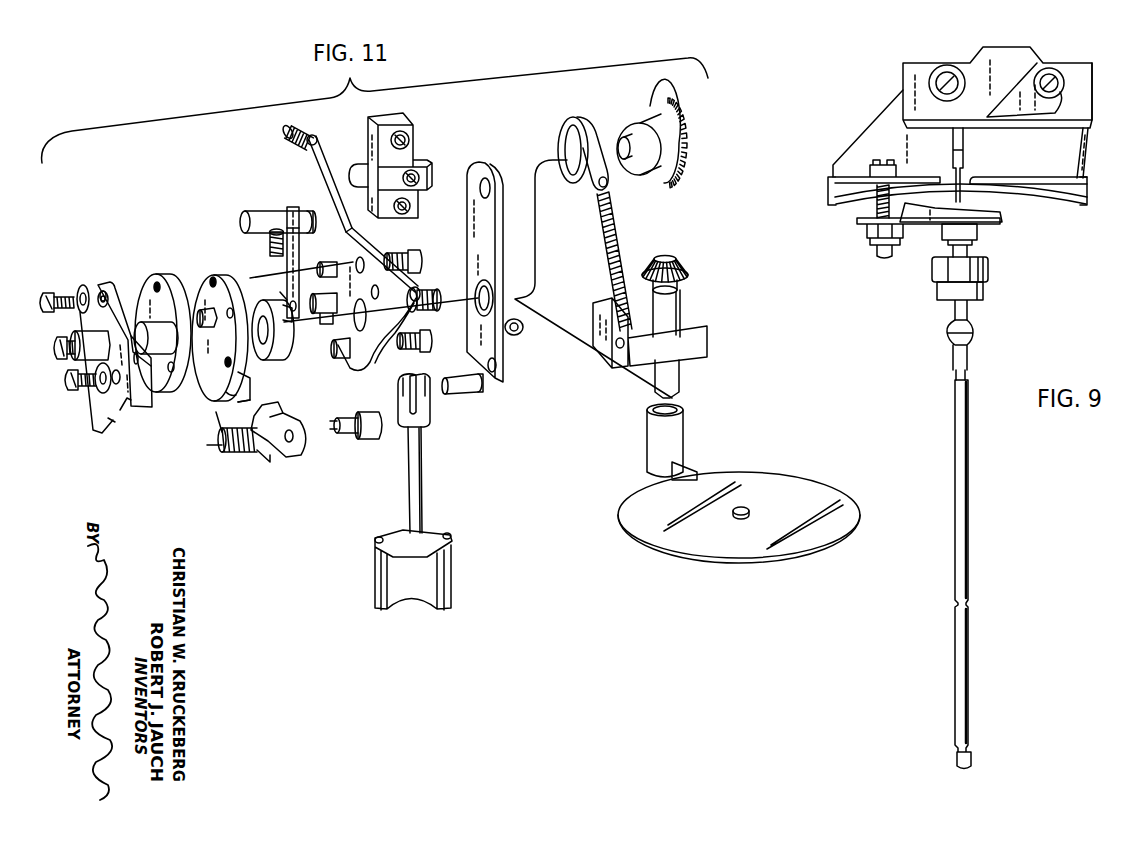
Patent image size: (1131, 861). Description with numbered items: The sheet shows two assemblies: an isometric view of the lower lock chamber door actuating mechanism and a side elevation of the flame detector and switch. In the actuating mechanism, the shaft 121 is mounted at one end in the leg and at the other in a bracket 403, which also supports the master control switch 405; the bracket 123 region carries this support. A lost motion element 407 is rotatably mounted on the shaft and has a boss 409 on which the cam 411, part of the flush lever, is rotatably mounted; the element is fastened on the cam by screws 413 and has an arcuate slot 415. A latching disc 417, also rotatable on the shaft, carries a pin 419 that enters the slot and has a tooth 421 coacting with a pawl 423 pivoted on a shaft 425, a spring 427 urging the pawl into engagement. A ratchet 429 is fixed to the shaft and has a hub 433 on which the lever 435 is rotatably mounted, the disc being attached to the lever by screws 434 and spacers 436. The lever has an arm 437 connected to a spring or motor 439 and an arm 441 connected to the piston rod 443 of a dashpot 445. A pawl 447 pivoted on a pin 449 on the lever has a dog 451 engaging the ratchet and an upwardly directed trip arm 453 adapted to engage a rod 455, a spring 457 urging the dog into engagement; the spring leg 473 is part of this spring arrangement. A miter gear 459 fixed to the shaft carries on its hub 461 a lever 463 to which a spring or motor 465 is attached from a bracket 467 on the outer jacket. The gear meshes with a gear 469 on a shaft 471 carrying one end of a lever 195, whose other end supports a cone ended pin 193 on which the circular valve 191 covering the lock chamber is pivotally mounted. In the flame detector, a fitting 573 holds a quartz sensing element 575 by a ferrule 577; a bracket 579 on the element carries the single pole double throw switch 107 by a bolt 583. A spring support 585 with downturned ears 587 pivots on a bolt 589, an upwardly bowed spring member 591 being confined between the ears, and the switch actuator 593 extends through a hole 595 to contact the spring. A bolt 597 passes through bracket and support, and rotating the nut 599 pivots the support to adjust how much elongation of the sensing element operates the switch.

In FIG. 11, the shaft 121 is at (64, 366).
In FIG. 11, the mounting bracket 123 is at (127, 407).
In FIG. 11, the circular valve 191 is at (811, 548).
In FIG. 11, the cone ended pin 193 is at (735, 508).
In FIG. 11, the lever 195 is at (681, 470).
In FIG. 11, the bracket 403 is at (503, 355).
In FIG. 11, the master control switch 405 is at (413, 126).
In FIG. 11, the lost motion element 407 is at (155, 276).
In FIG. 11, the boss 409 is at (128, 288).
In FIG. 11, the cam 411 is at (93, 430).
In FIG. 11, the screws 413 is at (70, 291).
In FIG. 11, the arcuate slot 415 is at (164, 277).
In FIG. 11, the latching disc 417 is at (206, 277).
In FIG. 11, the pin 419 is at (224, 310).
In FIG. 11, the tooth 421 is at (228, 384).
In FIG. 11, the pawl 423 is at (284, 412).
In FIG. 11, the shaft 425 is at (340, 434).
In FIG. 11, the spring 427 is at (252, 463).
In FIG. 11, the ratchet 429 is at (278, 364).
In FIG. 11, the hub 433 is at (287, 346).
In FIG. 11, the screws 434 is at (410, 253).
In FIG. 11, the lever 435 is at (351, 250).
In FIG. 11, the spacers 436 is at (340, 352).
In FIG. 11, the arm 437 is at (322, 170).
In FIG. 11, the spring or motor 439 is at (303, 145).
In FIG. 11, the arm 441 is at (416, 289).
In FIG. 11, the piston rod 443 is at (422, 470).
In FIG. 11, the dashpot 445 is at (438, 583).
In FIG. 11, the pawl 447 is at (299, 239).
In FIG. 11, the pin 449 is at (324, 292).
In FIG. 11, the dog 451 is at (288, 290).
In FIG. 11, the trip arm 453 is at (292, 208).
In FIG. 11, the rod 455 is at (250, 214).
In FIG. 11, the spring 457 is at (279, 253).
In FIG. 11, the miter gear 459 is at (650, 104).
In FIG. 11, the hub 461 is at (640, 125).
In FIG. 11, the lever 463 is at (598, 187).
In FIG. 11, the spring or motor 465 is at (620, 236).
In FIG. 11, the bracket 467 is at (708, 345).
In FIG. 11, the gear 469 is at (686, 264).
In FIG. 11, the shaft 471 is at (682, 302).
In FIG. 11, the spring leg 473 is at (241, 410).
In FIG. 9, the single pole double throw switch 107 is at (1070, 85).
In FIG. 9, the fitting 573 is at (988, 268).
In FIG. 9, the flame responsive sensing element 575 is at (964, 457).
In FIG. 9, the ferrule 577 is at (970, 327).
In FIG. 9, the bracket 579 is at (1045, 94).
In FIG. 9, the bolt 583 is at (1048, 68).
In FIG. 9, the spring support 585 is at (891, 117).
In FIG. 9, the downturned ears 587 is at (828, 191).
In FIG. 9, the bolt 589 is at (946, 68).
In FIG. 9, the upwardly bowed spring member 591 is at (1025, 195).
In FIG. 9, the switch actuator 593 is at (955, 166).
In FIG. 9, the hole 595 is at (973, 180).
In FIG. 9, the bolt 597 is at (883, 165).
In FIG. 9, the nut 599 is at (878, 242).